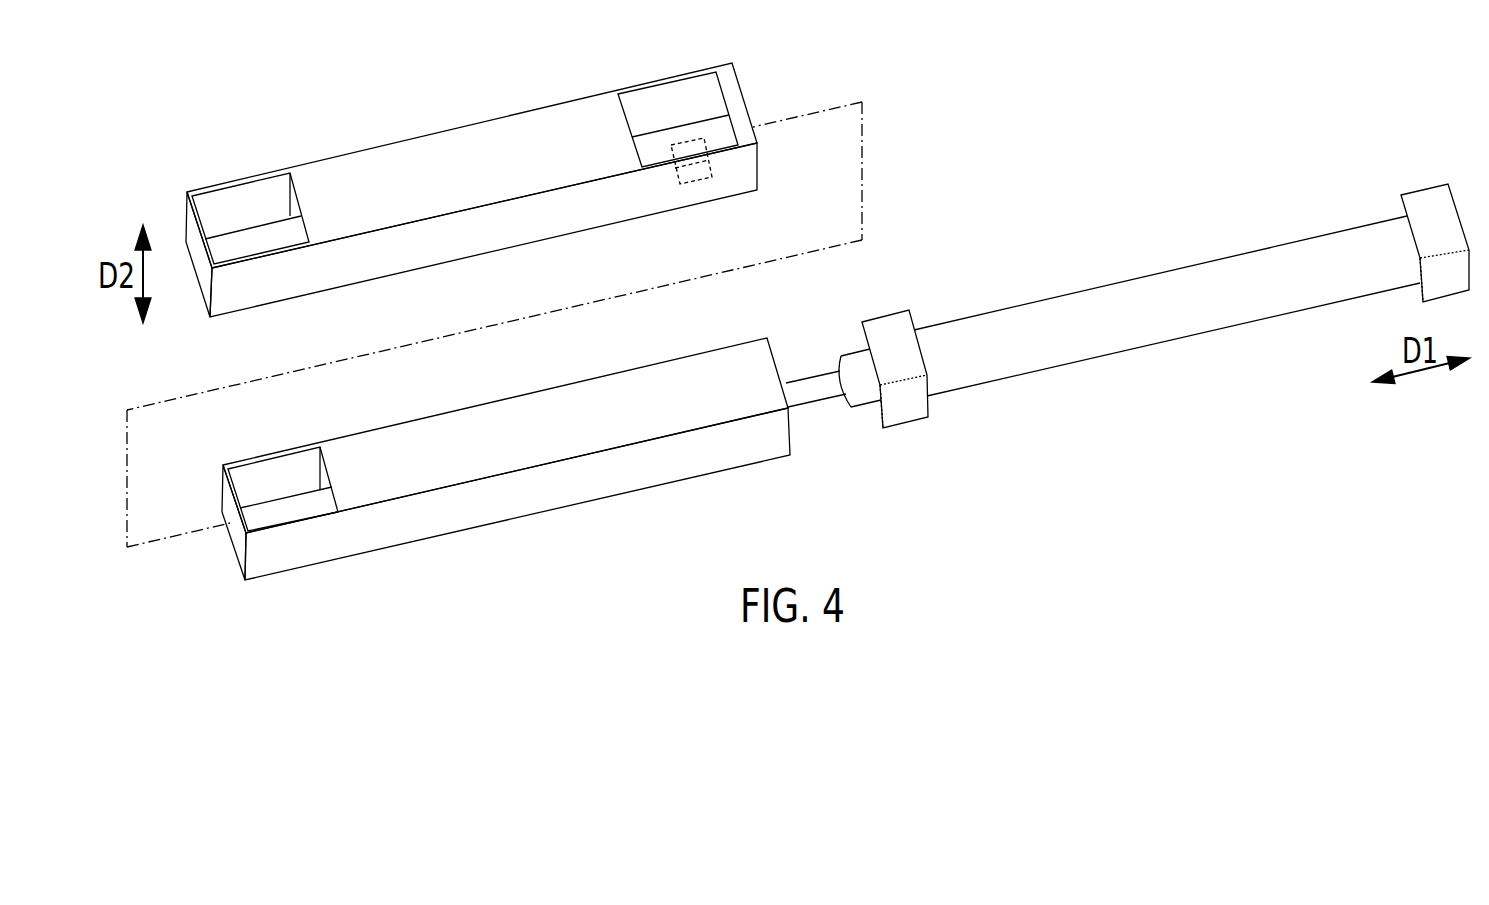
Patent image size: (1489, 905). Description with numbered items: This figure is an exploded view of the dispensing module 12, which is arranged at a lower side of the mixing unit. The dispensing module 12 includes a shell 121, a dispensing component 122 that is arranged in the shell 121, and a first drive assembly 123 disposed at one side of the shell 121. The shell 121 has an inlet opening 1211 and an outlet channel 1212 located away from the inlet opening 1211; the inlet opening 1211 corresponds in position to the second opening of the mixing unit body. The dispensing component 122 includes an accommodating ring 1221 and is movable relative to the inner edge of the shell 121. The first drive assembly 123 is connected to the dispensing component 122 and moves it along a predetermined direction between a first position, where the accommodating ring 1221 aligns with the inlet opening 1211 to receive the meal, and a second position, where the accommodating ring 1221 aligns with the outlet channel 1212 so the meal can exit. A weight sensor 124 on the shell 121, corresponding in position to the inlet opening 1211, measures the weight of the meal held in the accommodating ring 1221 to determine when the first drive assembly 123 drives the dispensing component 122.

The dispensing module 12 is at (223, 85).
The shell 121 is at (456, 122).
The inlet opening 1211 is at (670, 108).
The outlet channel 1212 is at (243, 237).
The weight sensor 124 is at (696, 190).
The dispensing component 122 is at (557, 514).
The accommodating ring 1221 is at (283, 485).
The first drive assembly 123 is at (1125, 302).